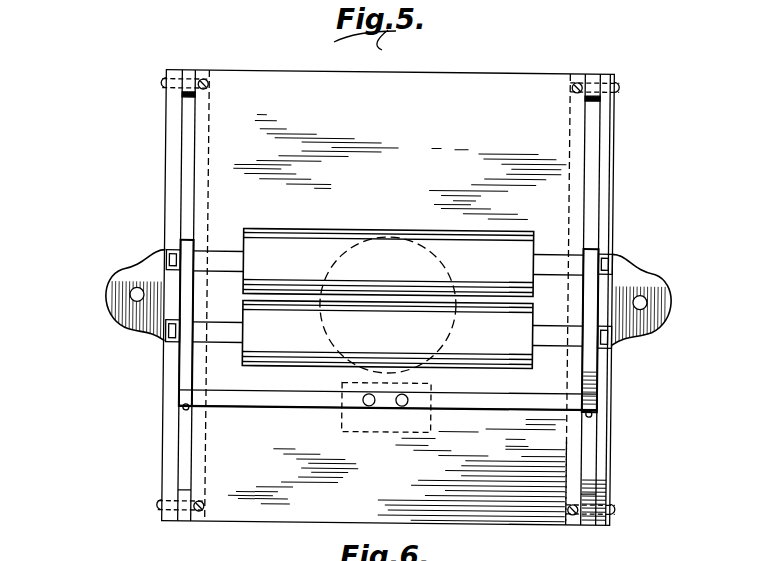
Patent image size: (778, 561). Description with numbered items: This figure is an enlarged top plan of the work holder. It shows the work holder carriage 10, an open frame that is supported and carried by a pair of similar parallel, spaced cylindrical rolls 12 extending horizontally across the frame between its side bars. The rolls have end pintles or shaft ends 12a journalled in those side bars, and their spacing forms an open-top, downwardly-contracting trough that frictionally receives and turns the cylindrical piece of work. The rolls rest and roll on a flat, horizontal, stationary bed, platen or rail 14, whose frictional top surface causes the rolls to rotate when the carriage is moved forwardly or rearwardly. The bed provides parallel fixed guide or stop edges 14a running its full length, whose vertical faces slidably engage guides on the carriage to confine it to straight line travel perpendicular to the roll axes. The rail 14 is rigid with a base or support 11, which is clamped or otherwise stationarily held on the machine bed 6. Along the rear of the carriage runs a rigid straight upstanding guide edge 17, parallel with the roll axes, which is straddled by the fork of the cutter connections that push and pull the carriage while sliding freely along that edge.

The bed, platen or rail 14 is at (478, 88).
The guide or stop edges 14a is at (187, 140).
The work holder carriage 10 is at (185, 362).
The end pintles or shaft ends 12a is at (167, 257).
The machine bed 6 is at (104, 297).
The rolls 12 is at (372, 245).
The guide edge 17 is at (513, 400).
The base or support 11 is at (560, 528).